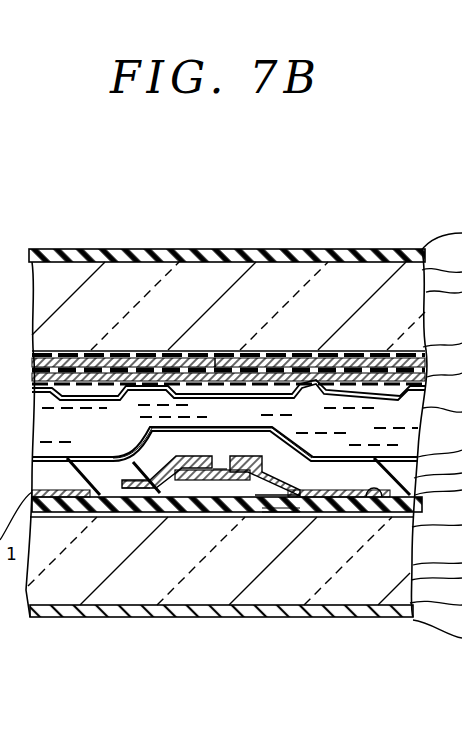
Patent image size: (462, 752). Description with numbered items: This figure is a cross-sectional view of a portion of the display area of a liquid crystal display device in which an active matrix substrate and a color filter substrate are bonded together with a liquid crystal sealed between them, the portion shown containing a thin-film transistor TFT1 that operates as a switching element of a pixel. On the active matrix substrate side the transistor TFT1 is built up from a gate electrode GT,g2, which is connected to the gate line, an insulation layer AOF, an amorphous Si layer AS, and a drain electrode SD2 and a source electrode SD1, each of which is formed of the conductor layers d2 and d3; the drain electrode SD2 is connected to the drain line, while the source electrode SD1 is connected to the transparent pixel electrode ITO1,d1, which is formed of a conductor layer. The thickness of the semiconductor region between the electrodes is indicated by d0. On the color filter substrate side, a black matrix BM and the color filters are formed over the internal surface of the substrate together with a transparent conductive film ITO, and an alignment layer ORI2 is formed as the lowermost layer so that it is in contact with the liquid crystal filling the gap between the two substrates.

The transparent conductive film ITO is at (44, 257).
The black matrix BM is at (143, 368).
The upper alignment layer ORI2 is at (316, 392).
The thin-film transistor TFT1 is at (188, 437).
The amorphous Si layer AS is at (197, 482).
The drain electrode SD2 is at (123, 521).
The source electrode SD1 is at (371, 512).
The conductor layer d3 is at (141, 488).
The conductor layer d2 is at (150, 488).
The semiconductor contact layer d0 is at (217, 470).
The insulation layer AOF is at (276, 498).
The gate electrode GT,g2 is at (157, 517).
The transparent pixel electrode ITO1,d1 is at (379, 598).